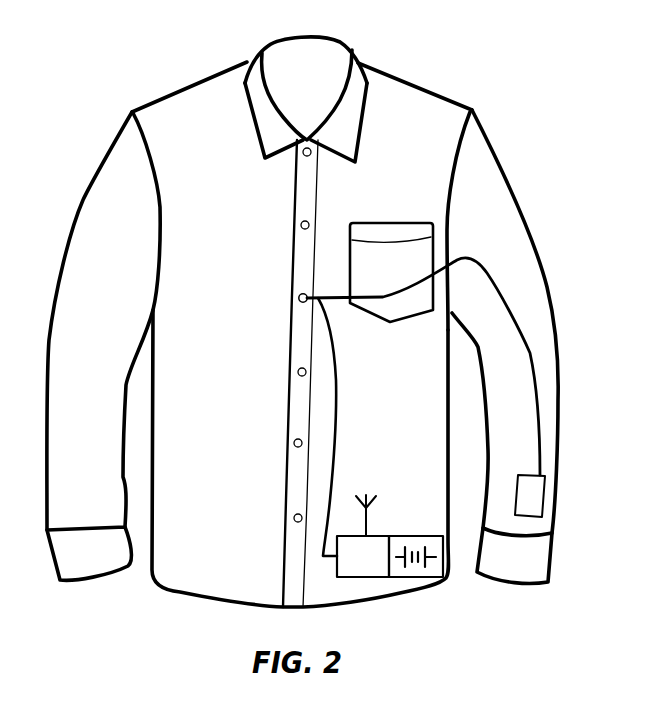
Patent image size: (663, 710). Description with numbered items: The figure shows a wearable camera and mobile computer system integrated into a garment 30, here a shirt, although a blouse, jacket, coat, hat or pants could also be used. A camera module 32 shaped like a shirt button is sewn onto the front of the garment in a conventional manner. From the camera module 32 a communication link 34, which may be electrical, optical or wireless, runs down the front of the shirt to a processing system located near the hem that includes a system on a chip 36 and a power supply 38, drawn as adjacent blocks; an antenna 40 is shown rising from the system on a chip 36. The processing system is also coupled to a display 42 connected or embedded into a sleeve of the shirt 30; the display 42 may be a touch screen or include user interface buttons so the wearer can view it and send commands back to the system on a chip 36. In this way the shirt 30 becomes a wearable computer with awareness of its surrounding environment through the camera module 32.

The garment 30 is at (420, 97).
The camera module 32 is at (299, 297).
The communication link 34 is at (338, 395).
The system on a chip 36 is at (362, 577).
The power supply 38 is at (428, 577).
The antenna 40 is at (367, 516).
The display 42 is at (533, 490).